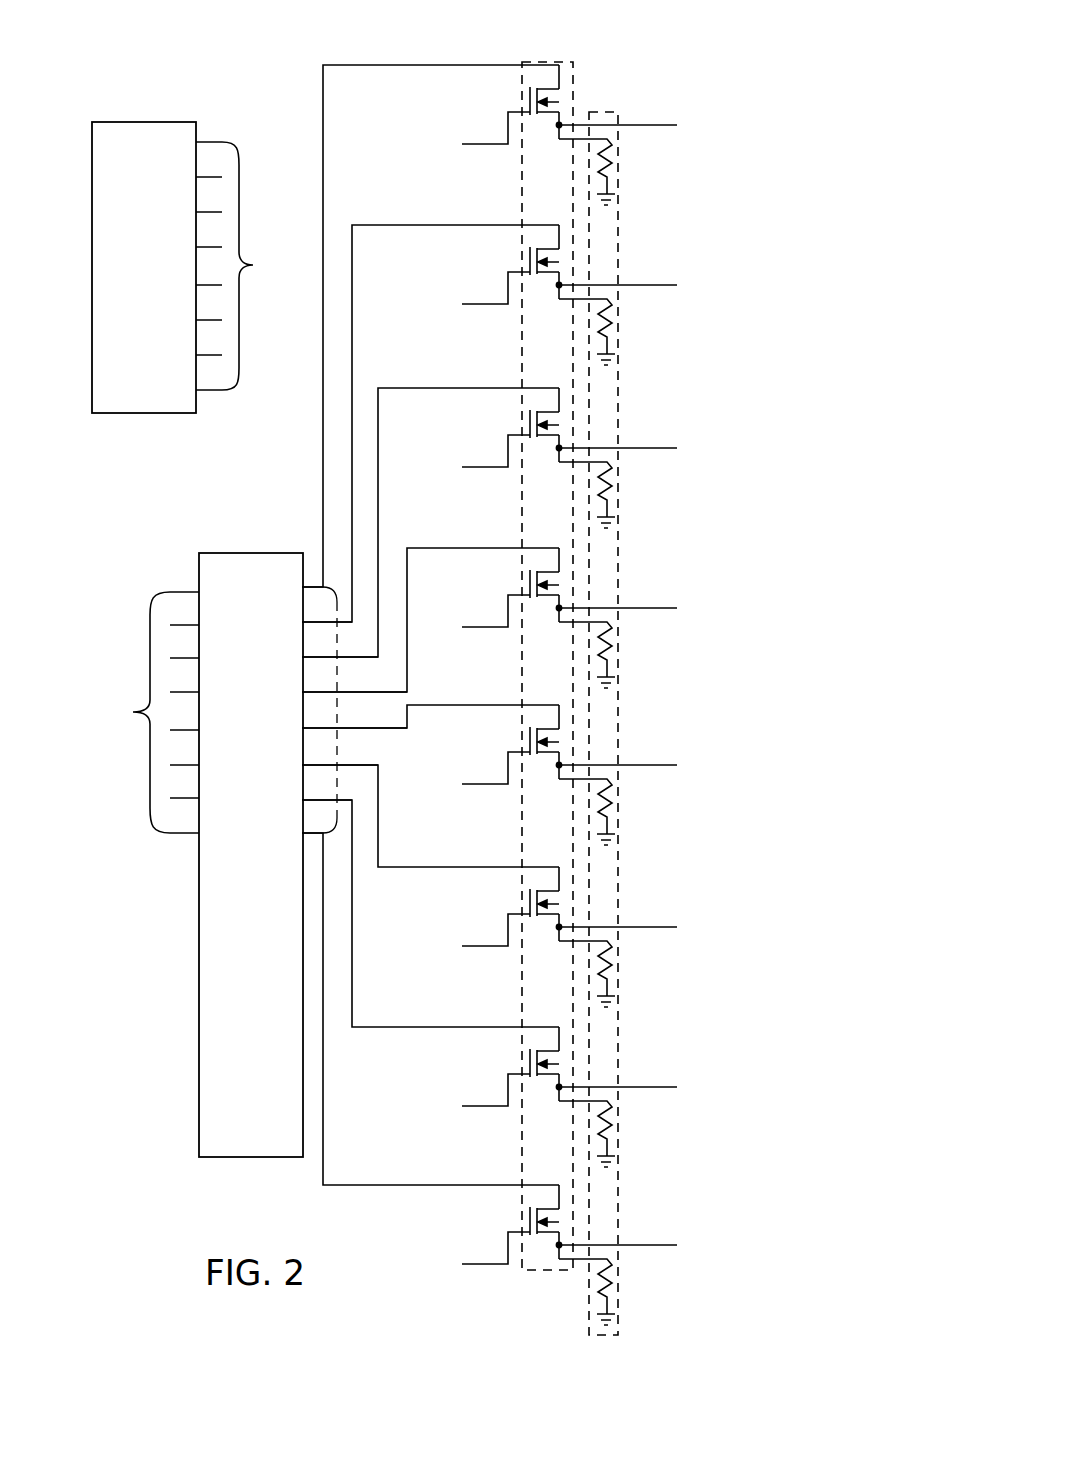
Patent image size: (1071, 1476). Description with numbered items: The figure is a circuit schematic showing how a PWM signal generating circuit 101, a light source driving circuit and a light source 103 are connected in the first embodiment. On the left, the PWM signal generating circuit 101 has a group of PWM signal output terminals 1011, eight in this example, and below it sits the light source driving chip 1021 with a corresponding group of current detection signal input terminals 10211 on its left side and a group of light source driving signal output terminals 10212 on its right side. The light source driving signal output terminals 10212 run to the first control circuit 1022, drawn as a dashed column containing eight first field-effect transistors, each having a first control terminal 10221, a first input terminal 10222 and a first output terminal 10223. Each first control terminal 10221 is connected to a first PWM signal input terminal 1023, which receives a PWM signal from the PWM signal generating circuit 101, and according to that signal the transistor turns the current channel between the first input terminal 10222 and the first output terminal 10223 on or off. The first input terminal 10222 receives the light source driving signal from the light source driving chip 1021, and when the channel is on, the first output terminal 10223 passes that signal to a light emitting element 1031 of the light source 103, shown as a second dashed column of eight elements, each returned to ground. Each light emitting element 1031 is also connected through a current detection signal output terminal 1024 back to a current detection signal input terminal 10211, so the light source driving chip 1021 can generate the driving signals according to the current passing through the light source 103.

The PWM signal generating circuit 101 is at (113, 121).
The PWM signal output terminal 1011 is at (253, 263).
The light source driving chip 1021 is at (210, 553).
The current detection signal input terminal 10211 is at (138, 712).
The light source driving signal output terminal 10212 is at (342, 718).
The first control circuit 1022 is at (530, 63).
The first control terminal 10221 is at (508, 112).
The first input terminal 10222 is at (562, 75).
The first output terminal 10223 is at (561, 123).
The first PWM signal input terminal 1023 is at (485, 145).
The current detection signal output terminal 1024 is at (677, 125).
The light source 103 is at (620, 112).
The light emitting element 1031 is at (607, 165).